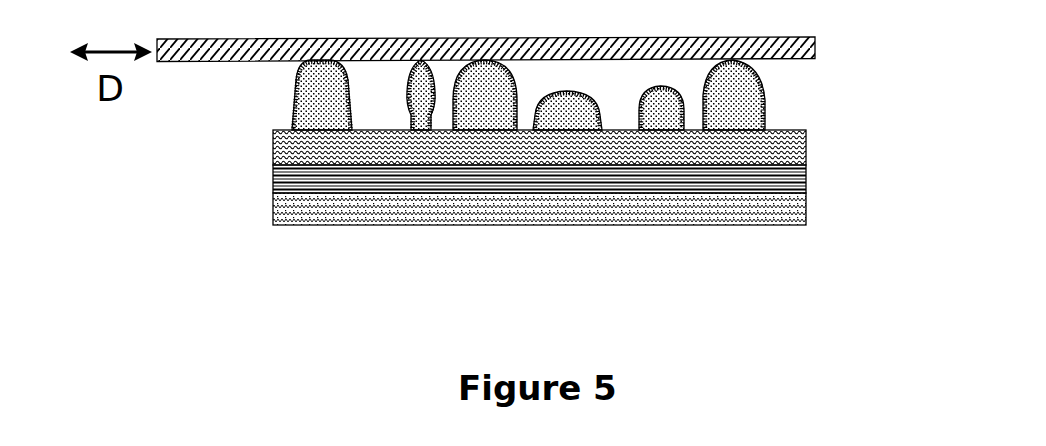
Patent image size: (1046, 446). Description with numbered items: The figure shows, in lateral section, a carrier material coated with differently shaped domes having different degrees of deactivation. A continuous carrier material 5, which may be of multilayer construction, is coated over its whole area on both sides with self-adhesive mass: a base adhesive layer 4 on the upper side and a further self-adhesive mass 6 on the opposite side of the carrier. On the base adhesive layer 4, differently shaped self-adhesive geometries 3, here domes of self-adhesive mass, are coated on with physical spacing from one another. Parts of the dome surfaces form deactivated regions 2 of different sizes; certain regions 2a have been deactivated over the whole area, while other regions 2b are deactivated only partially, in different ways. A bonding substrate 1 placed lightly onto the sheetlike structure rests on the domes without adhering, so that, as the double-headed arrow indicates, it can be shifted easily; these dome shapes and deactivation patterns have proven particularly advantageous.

The bonding substrate 1 is at (815, 42).
The deactivated regions 2 is at (735, 68).
The regions deactivated over the whole area 2a is at (677, 102).
The partially deactivated regions 2b is at (556, 94).
The self-adhesive geometries 3 is at (722, 102).
The self-adhesive mass 4 is at (765, 148).
The carrier material 5 is at (790, 183).
The self-adhesive mass 6 is at (732, 208).